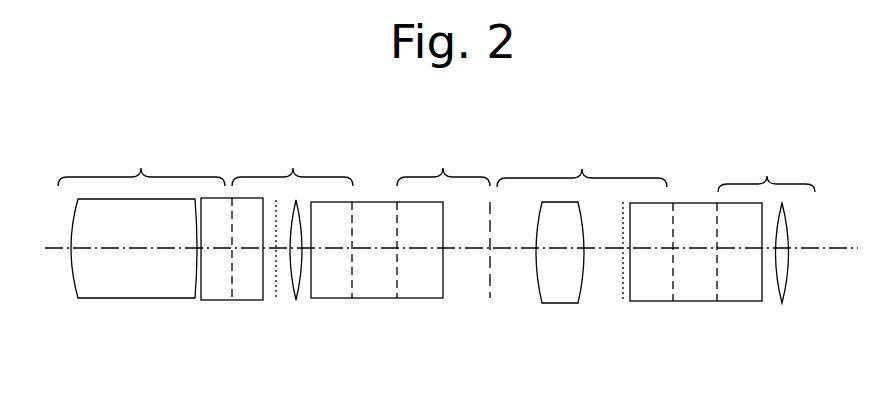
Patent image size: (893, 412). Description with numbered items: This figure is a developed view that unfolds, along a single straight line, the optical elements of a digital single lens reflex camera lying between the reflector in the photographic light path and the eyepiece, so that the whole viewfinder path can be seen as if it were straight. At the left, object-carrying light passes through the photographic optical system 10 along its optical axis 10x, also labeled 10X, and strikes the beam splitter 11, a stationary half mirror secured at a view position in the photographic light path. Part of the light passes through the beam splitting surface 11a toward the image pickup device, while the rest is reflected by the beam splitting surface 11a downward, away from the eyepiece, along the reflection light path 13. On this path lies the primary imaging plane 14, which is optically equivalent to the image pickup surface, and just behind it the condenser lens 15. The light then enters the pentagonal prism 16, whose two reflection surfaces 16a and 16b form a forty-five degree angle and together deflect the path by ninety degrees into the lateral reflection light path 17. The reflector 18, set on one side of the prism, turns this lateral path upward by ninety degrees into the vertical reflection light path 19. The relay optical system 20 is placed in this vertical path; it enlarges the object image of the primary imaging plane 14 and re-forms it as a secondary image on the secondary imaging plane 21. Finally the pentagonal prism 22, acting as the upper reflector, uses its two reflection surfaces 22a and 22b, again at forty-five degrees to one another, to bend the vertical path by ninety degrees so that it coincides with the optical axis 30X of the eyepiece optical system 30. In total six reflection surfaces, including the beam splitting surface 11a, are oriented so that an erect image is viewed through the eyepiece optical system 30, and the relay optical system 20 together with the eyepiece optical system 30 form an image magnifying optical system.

The optical axis of the photographic optical system 10X is at (141, 161).
The optical axis of the photographic optical system 10x is at (53, 250).
The photographic optical system 10 is at (108, 299).
The beam splitter 11 is at (212, 300).
The beam splitting surface 11a is at (230, 300).
The reflection light path 13 is at (292, 161).
The primary imaging plane 14 is at (276, 300).
The condenser lens 15 is at (295, 300).
The pentagonal prism 16 is at (377, 299).
The reflection surface 16a is at (351, 299).
The reflection surface 16b is at (397, 299).
The lateral reflection light path 17 is at (443, 163).
The reflector 18 is at (489, 300).
The vertical reflection light path 19 is at (582, 164).
The relay optical system 20 is at (562, 303).
The secondary imaging plane 21 is at (622, 300).
The pentagonal prism 22 is at (697, 302).
The reflection surface 22a is at (672, 302).
The reflection surface 22b is at (717, 302).
The optical axis of the eyepiece optical system 30X is at (766, 172).
The eyepiece optical system 30 is at (780, 303).